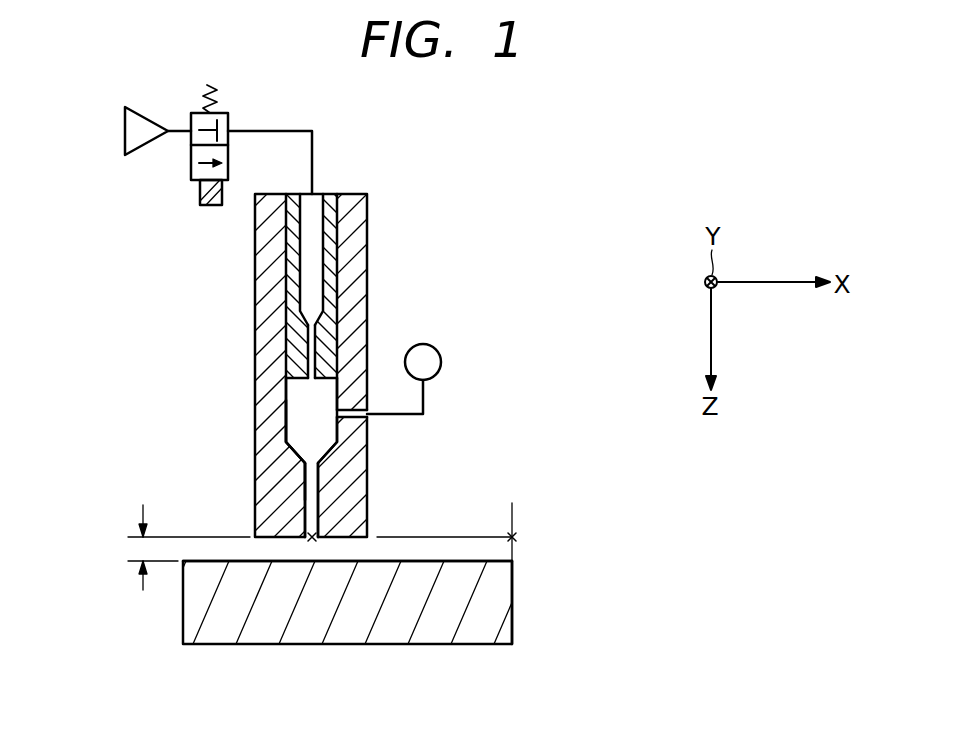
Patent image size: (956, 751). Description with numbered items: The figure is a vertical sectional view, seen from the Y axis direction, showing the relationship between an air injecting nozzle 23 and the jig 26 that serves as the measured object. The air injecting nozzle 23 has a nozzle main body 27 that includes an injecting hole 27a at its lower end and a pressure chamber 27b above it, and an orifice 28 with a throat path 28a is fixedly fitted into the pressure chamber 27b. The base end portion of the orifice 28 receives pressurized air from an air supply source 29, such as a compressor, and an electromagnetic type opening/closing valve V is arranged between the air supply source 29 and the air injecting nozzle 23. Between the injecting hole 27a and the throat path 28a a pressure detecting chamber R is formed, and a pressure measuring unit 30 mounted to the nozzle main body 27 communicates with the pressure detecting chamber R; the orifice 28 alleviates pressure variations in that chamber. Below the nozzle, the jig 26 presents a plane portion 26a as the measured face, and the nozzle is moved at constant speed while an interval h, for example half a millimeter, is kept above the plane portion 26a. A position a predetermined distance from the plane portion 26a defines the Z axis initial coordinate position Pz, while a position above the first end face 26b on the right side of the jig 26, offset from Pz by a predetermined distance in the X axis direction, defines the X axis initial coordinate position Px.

The air injecting nozzle 23 is at (392, 245).
The jig 26 is at (358, 632).
The plane portion 26a is at (462, 561).
The first end face 26b is at (516, 603).
The nozzle main body 27 is at (270, 362).
The injecting hole 27a is at (306, 500).
The pressure chamber 27b is at (296, 412).
The orifice 28 is at (292, 326).
The throat path 28a is at (318, 356).
The air supply source 29 is at (145, 123).
The pressure measuring unit 30 is at (428, 362).
The electromagnetic type opening/closing valve V is at (192, 160).
The pressure detecting chamber R is at (315, 447).
The Z axis initial coordinate position Pz is at (313, 536).
The X axis initial coordinate position Px is at (520, 538).
The interval h is at (179, 547).